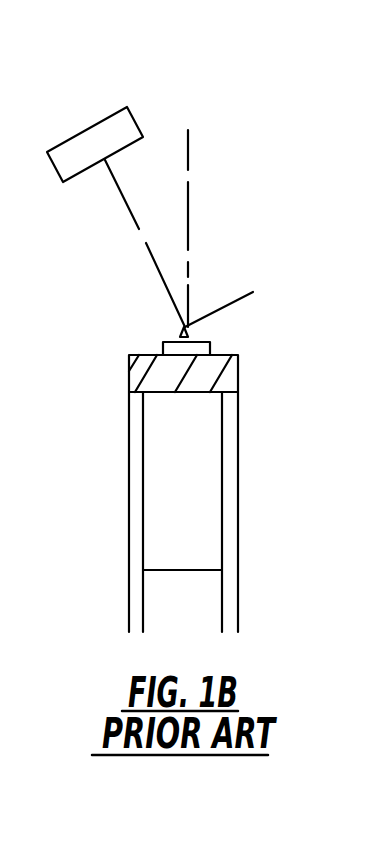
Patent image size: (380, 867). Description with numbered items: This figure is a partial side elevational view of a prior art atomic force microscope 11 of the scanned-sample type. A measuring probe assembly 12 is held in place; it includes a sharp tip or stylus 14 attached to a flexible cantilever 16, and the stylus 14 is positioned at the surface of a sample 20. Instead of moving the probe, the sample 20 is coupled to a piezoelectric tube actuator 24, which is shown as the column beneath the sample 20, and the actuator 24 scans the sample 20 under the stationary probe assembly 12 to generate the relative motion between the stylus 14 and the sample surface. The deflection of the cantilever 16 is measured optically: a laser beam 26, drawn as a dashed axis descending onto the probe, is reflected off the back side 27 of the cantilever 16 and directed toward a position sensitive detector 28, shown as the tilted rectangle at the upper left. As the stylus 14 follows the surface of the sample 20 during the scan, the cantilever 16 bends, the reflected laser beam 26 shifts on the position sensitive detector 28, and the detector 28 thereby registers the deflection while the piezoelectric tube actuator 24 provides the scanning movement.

The atomic force microscope 11 is at (240, 152).
The measuring probe assembly 12 is at (240, 287).
The stylus 14 is at (178, 334).
The cantilever 16 is at (228, 300).
The sample 20 is at (210, 343).
The piezoelectric tube actuator 24 is at (245, 542).
The laser beam 26 is at (190, 195).
The back side of cantilever 27 is at (198, 310).
The position sensitive detector 28 is at (115, 106).